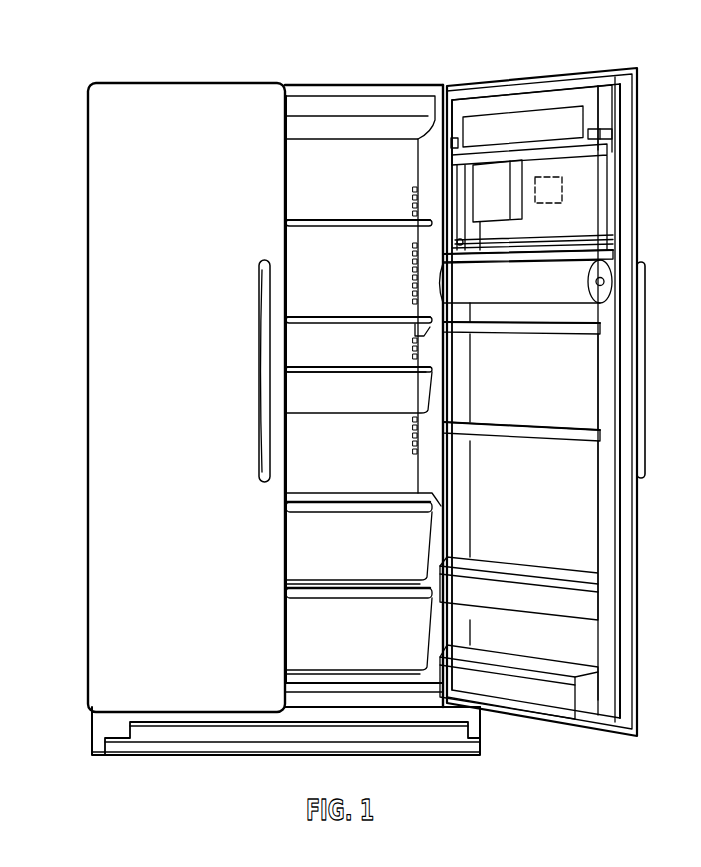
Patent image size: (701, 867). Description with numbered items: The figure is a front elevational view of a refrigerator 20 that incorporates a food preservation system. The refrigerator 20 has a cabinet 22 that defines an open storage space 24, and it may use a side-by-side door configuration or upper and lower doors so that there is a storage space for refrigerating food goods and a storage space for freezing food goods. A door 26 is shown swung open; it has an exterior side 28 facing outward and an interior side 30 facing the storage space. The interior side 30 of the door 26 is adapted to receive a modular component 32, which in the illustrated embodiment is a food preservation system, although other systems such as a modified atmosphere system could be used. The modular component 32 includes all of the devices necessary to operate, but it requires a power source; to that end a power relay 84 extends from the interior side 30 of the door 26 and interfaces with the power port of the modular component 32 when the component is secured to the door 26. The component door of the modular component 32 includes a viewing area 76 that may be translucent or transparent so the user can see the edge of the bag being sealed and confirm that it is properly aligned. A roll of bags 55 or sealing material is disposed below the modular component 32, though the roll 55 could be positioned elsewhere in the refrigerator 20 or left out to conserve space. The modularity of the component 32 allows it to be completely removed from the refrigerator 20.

The refrigerator 20 is at (527, 48).
The cabinet 22 is at (302, 85).
The open storage space 24 is at (336, 305).
The door 26 is at (637, 125).
The exterior side 28 is at (167, 305).
The interior side 30 is at (522, 391).
The modular component 32 is at (623, 176).
The roll of bags 55 is at (503, 290).
The viewing area 76 is at (497, 127).
The power relay 84 is at (555, 185).